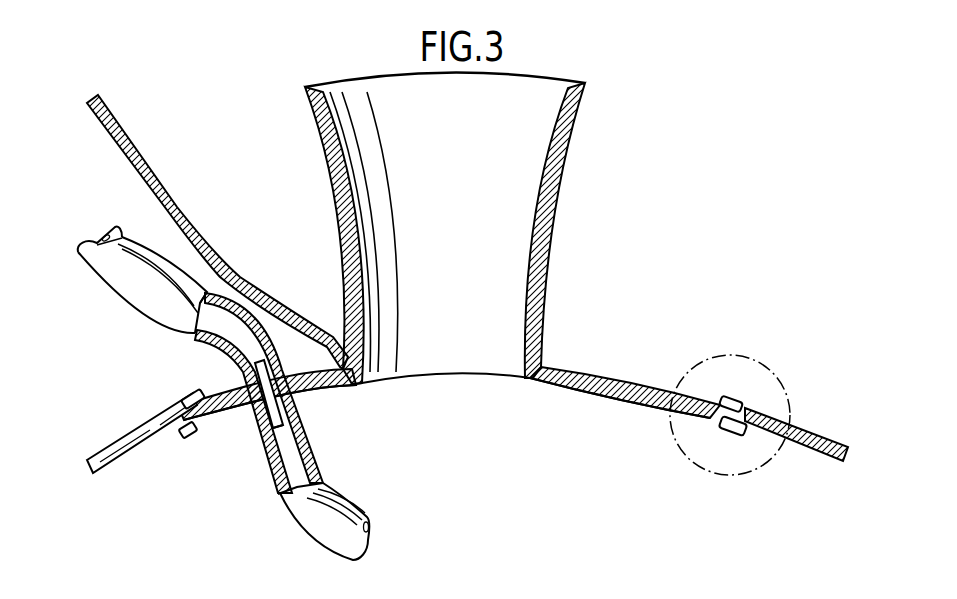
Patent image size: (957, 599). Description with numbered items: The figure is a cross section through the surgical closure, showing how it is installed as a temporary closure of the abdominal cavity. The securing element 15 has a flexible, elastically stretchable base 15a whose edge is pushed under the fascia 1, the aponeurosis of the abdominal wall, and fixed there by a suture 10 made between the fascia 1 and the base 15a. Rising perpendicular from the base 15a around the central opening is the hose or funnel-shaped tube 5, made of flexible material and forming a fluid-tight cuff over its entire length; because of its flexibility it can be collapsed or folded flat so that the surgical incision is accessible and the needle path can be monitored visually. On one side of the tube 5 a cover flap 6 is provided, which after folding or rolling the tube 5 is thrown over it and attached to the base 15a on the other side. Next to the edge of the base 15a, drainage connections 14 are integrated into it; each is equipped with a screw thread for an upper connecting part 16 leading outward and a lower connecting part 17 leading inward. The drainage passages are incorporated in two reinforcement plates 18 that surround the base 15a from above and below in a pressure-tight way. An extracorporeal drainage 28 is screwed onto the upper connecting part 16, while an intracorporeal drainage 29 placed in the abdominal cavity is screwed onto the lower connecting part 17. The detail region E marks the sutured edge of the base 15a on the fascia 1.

The fascia 1 is at (103, 453).
The tube 5 is at (544, 220).
The cover flap 6 is at (180, 223).
The suture 10 is at (192, 397).
The drainage connection 14 is at (248, 447).
The securing element 15 is at (588, 367).
The base 15a is at (605, 397).
The upper connecting part 16 is at (238, 370).
The lower connecting part 17 is at (308, 428).
The reinforcement plate 18 is at (297, 368).
The extracorporeal drainage 28 is at (112, 287).
The intracorporeal drainage 29 is at (310, 523).
The detail circle E is at (783, 380).